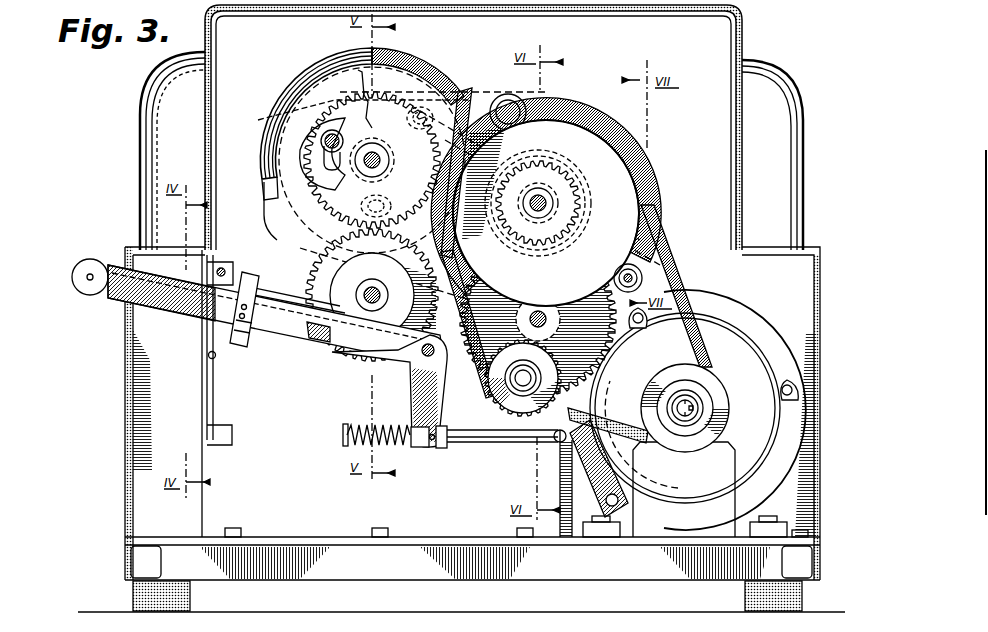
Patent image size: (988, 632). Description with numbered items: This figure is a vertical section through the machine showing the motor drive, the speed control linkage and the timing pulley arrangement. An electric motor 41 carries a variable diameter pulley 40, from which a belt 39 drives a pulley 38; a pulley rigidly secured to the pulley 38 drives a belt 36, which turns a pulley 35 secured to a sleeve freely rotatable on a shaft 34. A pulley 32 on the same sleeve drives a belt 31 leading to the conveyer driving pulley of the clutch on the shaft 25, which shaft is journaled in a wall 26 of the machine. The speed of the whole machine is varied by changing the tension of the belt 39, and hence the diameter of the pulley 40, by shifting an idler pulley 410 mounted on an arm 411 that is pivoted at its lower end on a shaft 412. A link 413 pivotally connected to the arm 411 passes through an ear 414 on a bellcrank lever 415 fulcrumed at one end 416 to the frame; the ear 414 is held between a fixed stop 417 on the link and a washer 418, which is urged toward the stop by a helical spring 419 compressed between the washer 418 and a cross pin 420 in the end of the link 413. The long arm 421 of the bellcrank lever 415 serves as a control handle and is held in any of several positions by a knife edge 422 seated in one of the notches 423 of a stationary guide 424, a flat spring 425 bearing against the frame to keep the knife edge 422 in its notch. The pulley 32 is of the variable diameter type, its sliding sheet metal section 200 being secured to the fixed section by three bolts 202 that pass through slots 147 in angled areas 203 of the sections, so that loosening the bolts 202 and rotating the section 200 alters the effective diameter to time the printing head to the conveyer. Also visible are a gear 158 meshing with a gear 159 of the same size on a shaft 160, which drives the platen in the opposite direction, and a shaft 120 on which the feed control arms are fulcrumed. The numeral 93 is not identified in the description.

The shaft 25 is at (543, 199).
The wall 26 is at (210, 508).
The belt 31 is at (450, 95).
The pulley 32 is at (418, 70).
The shaft 34 is at (376, 156).
The pulley 35 is at (263, 174).
The belt 36 is at (572, 222).
The pulley 38 is at (636, 172).
The belt 39 is at (658, 215).
The variable diameter pulley 40 is at (730, 393).
The electric motor 41 is at (750, 305).
The gear shaft 93 is at (539, 316).
The shaft 120 is at (645, 276).
The slots 147 is at (321, 142).
The gear 158 is at (348, 113).
The gear 159 is at (335, 342).
The shaft 160 is at (348, 362).
The pulley section 200 is at (345, 98).
The bolts 202 is at (320, 122).
The areas 203 is at (322, 160).
The idler pulley 410 is at (496, 392).
The arm 411 is at (630, 450).
The shaft 412 is at (622, 503).
The link 413 is at (500, 443).
The ear 414 is at (440, 450).
The bellcrank lever 415 is at (398, 378).
The fulcrum end 416 is at (433, 356).
The fixed stop 417 is at (448, 442).
The washer 418 is at (417, 449).
The helical spring 419 is at (342, 446).
The cross pin 420 is at (346, 432).
The long arm 421 is at (112, 262).
The knife edge 422 is at (300, 292).
The notches 423 is at (209, 354).
The stationary guide 424 is at (207, 418).
The flat spring 425 is at (238, 325).